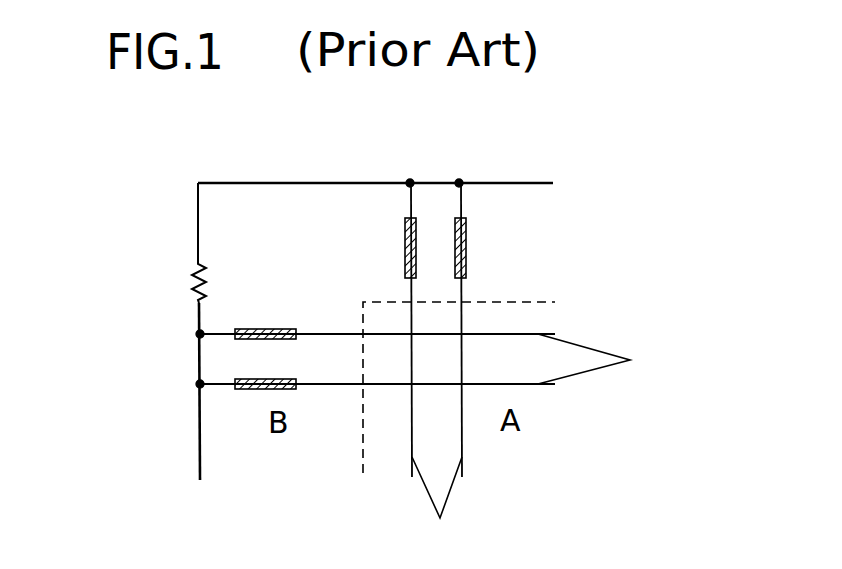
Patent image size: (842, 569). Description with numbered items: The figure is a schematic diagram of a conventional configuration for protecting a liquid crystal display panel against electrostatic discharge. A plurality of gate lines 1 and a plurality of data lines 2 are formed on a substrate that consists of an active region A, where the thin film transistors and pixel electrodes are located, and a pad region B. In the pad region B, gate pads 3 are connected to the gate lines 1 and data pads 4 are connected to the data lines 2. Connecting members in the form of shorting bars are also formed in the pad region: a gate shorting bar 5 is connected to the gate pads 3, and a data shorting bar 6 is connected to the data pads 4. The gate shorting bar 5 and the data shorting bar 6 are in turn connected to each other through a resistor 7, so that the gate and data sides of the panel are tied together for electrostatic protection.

The gate lines 1 is at (428, 359).
The data lines 2 is at (436, 368).
The gate pads 3 is at (275, 379).
The data pads 4 is at (416, 258).
The gate shorting bar 5 is at (200, 427).
The data shorting bar 6 is at (498, 183).
The resistor 7 is at (198, 279).